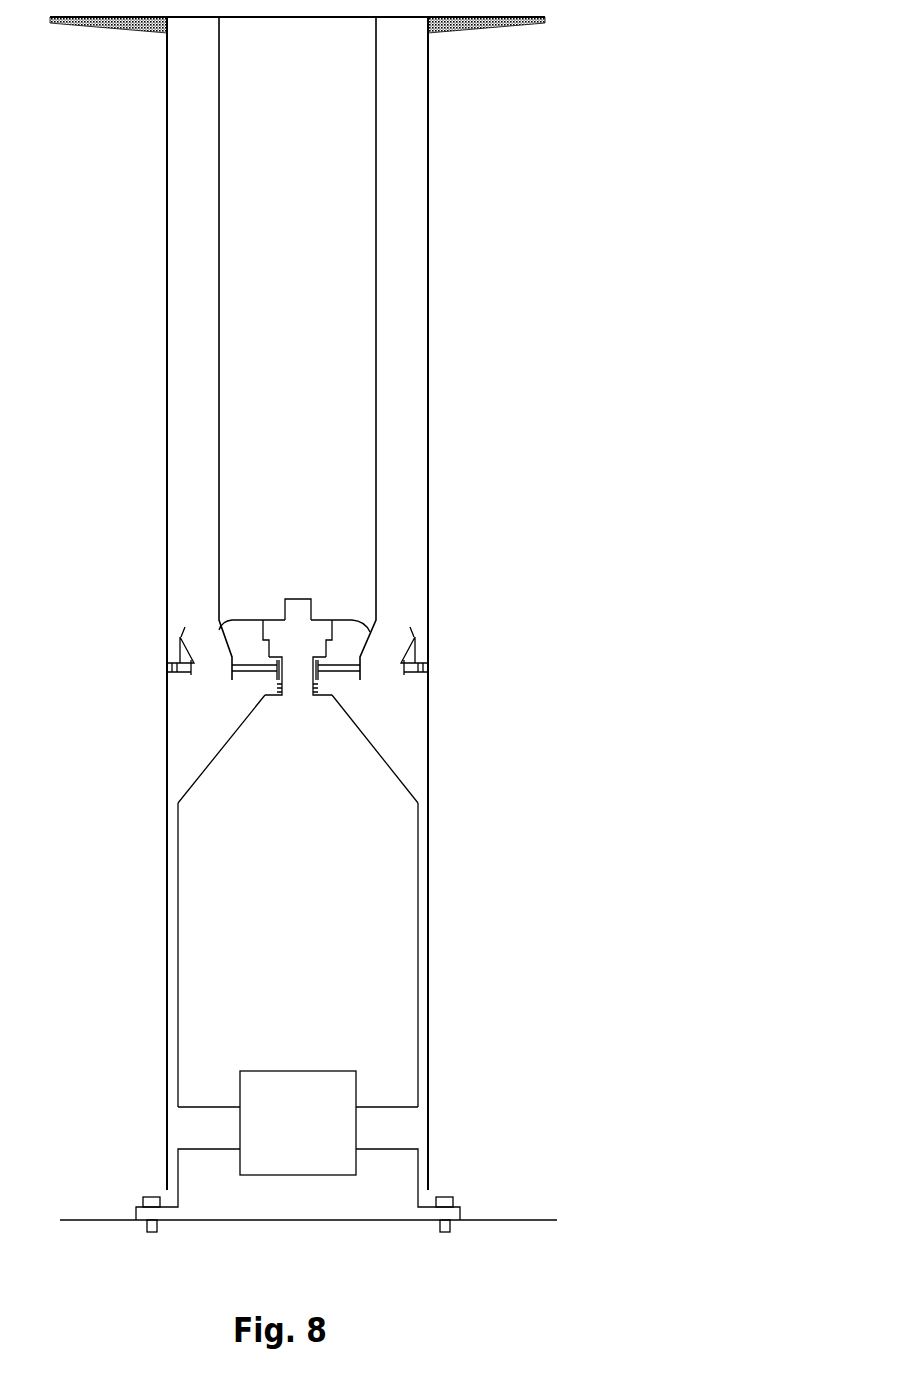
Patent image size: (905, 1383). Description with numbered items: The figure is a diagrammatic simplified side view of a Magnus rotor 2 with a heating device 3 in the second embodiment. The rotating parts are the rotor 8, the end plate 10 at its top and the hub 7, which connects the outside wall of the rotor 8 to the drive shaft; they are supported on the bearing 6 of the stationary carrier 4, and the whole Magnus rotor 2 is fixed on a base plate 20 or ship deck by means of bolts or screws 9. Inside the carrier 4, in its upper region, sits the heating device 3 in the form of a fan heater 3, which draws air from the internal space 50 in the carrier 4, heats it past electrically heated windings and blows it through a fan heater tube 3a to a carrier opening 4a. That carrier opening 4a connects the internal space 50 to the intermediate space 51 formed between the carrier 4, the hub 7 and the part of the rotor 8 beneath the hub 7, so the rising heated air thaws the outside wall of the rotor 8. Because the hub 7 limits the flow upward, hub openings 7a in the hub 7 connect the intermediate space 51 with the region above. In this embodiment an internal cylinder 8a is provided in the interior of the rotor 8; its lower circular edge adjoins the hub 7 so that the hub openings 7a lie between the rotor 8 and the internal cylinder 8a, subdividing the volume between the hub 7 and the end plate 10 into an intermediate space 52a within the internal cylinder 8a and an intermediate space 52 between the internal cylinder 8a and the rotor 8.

The Magnus rotor 2 is at (60, 198).
The end plate 10 is at (477, 30).
The rotor 8 is at (428, 303).
The internal cylinder 8a is at (376, 232).
The intermediate space within the internal cylinder 52a is at (338, 424).
The intermediate space 52 is at (398, 516).
The hub 7 is at (242, 634).
The bearing 6 is at (313, 642).
The hub opening 7a is at (200, 635).
The intermediate space 51 is at (405, 717).
The carrier 4 is at (256, 872).
The internal space 50 is at (387, 928).
The heating device 3 is at (300, 1097).
The fan heater tube 3a is at (207, 1120).
The carrier opening 4a is at (188, 1138).
The bolts or screws 9 is at (150, 1197).
The base plate 20 is at (292, 1273).